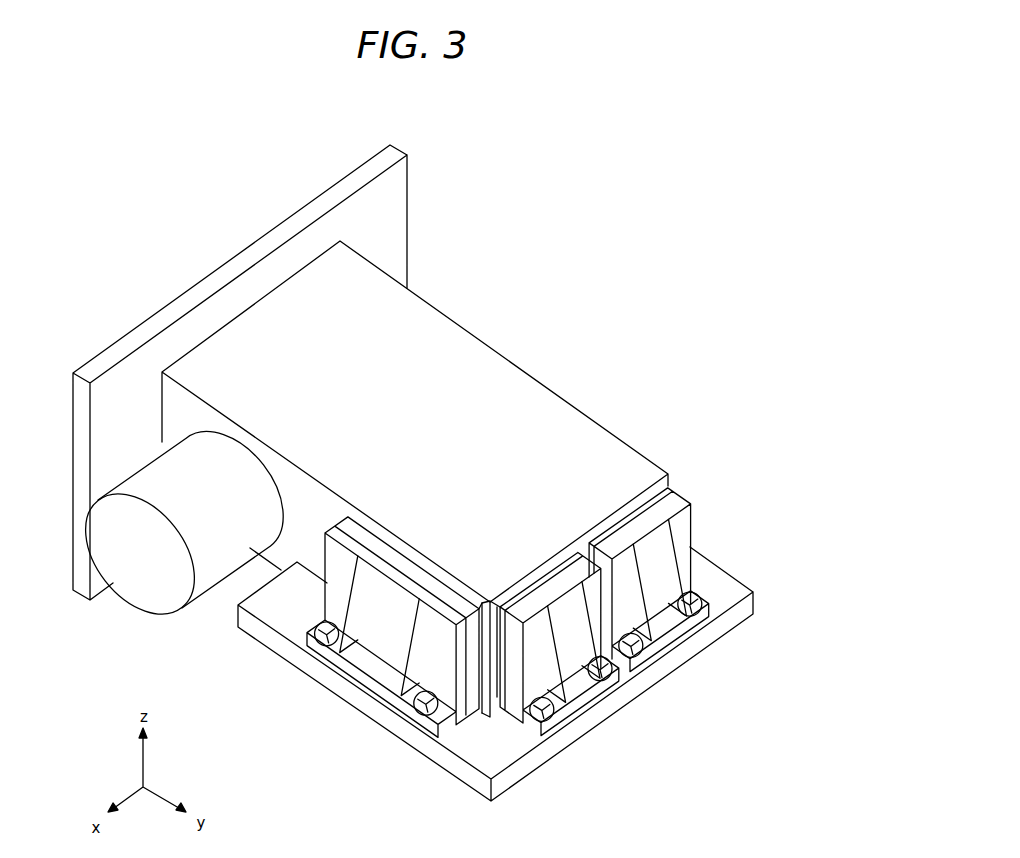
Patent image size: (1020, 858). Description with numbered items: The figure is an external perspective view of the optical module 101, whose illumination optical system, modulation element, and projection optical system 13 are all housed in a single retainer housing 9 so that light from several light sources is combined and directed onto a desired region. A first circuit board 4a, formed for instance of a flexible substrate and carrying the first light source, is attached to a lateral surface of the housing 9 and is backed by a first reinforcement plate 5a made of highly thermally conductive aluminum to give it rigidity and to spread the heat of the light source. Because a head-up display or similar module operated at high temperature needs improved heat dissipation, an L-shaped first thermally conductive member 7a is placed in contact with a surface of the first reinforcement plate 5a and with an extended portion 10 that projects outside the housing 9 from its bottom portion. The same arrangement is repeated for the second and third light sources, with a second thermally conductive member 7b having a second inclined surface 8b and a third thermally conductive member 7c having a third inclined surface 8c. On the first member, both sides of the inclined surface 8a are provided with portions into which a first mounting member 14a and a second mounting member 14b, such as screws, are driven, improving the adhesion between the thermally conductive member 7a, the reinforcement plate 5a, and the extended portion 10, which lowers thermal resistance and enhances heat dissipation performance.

The optical module 101 is at (790, 423).
The retainer housing 9 is at (282, 542).
The projection optical system 13 is at (133, 578).
The extended portion 10 is at (488, 758).
The first thermally conductive member 7a is at (385, 693).
The second thermally conductive member 7b is at (573, 712).
The third thermally conductive member 7c is at (667, 643).
The inclined surface 8a is at (360, 650).
The second inclined surface 8b is at (583, 682).
The third inclined surface 8c is at (670, 617).
The first circuit board 4a is at (493, 690).
The first reinforcement plate 5a is at (475, 688).
The first mounting member 14a is at (307, 633).
The second mounting member 14b is at (415, 715).